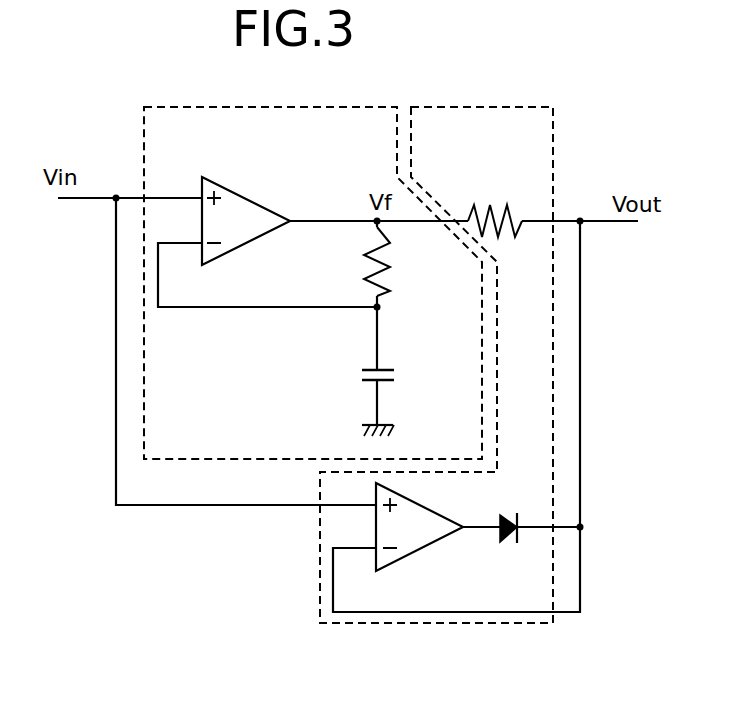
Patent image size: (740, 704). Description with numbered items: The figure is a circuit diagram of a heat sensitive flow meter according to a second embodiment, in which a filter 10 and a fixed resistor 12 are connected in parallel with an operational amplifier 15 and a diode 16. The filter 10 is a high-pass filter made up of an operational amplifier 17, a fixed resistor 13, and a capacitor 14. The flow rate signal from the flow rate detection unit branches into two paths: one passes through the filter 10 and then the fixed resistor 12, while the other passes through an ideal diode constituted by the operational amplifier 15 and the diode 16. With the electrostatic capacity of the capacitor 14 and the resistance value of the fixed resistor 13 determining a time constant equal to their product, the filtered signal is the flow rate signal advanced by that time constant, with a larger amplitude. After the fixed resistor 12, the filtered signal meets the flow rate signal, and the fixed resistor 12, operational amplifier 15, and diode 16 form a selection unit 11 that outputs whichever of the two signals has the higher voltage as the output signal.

The filter 10 is at (228, 459).
The selection unit 11 is at (553, 345).
The fixed resistor 12 is at (478, 205).
The fixed resistor 13 is at (392, 268).
The capacitor 14 is at (362, 377).
The operational amplifier 15 is at (433, 548).
The diode 16 is at (508, 545).
The operational amplifier 17 is at (240, 193).